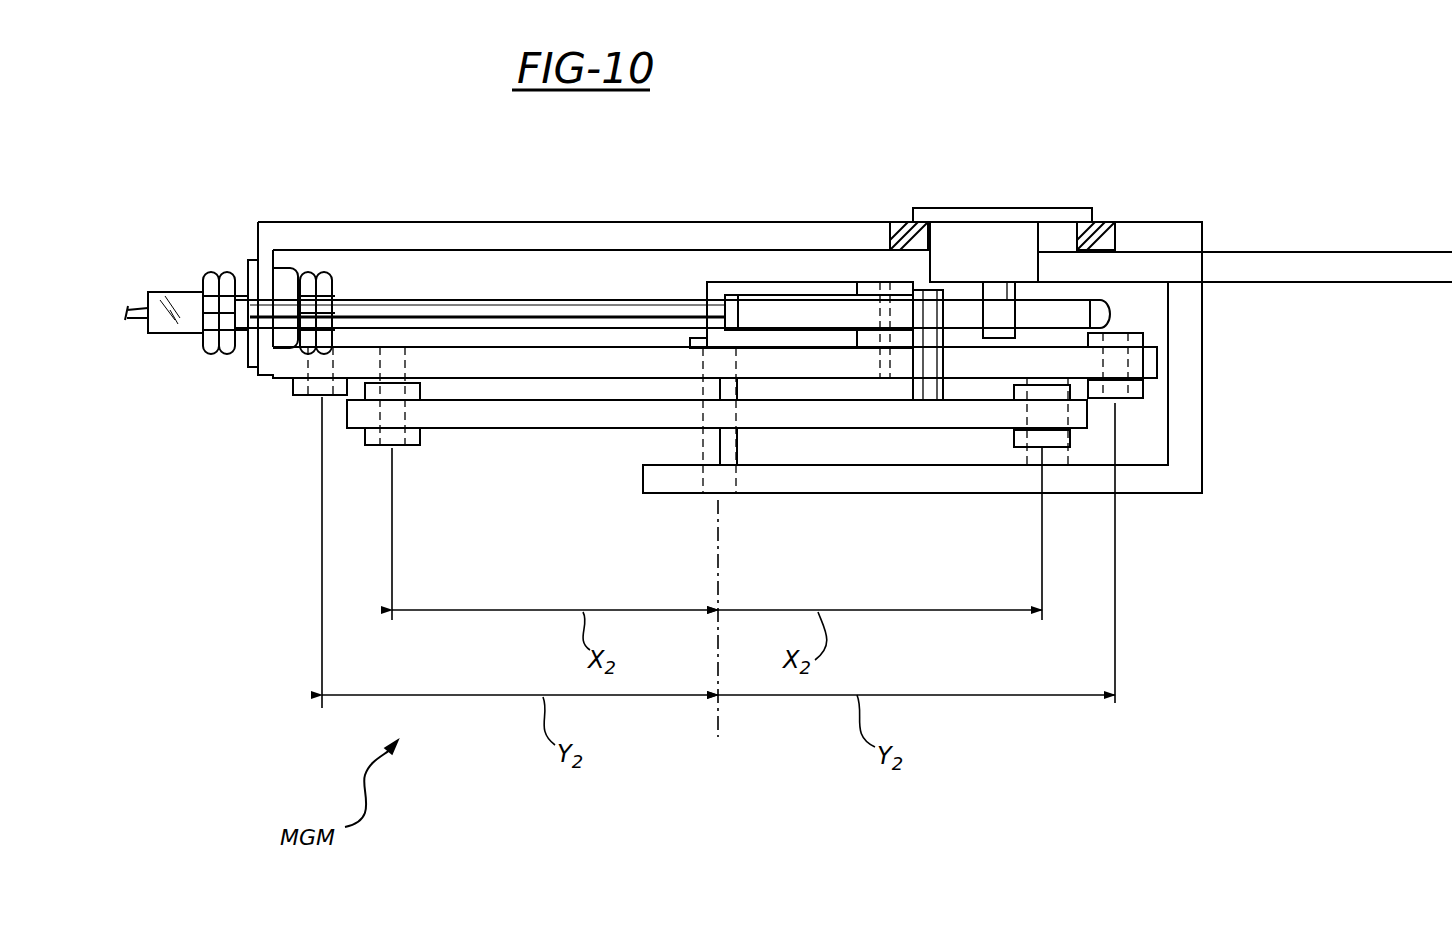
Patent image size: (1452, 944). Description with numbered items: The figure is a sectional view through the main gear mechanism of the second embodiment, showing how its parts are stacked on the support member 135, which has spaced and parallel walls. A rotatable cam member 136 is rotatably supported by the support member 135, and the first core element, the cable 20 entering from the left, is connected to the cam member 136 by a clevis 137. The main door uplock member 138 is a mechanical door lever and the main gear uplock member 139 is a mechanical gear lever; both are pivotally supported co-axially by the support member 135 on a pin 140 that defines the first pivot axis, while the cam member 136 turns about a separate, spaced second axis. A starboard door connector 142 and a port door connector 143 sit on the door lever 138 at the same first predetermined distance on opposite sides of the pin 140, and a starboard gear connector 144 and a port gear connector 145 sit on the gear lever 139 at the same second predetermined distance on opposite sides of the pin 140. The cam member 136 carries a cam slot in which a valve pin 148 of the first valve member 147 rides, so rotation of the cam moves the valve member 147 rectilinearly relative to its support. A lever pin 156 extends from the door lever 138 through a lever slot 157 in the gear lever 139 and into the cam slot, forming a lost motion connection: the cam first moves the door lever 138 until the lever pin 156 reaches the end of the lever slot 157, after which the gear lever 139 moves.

The cable 20 is at (185, 290).
The support member 135 is at (793, 235).
The rotatable cam member 136 is at (1113, 310).
The clevis 137 is at (845, 290).
The main door uplock member 138 is at (597, 430).
The main gear uplock member 139 is at (383, 362).
The pin 140 is at (703, 470).
The starboard door connector 142 is at (1043, 447).
The port door connector 143 is at (418, 446).
The starboard gear connector 144 is at (1137, 397).
The port gear connector 145 is at (313, 397).
The first valve member 147 is at (1145, 265).
The valve pin 148 is at (1025, 290).
The lever pin 156 is at (945, 355).
The lever slot 157 is at (915, 365).